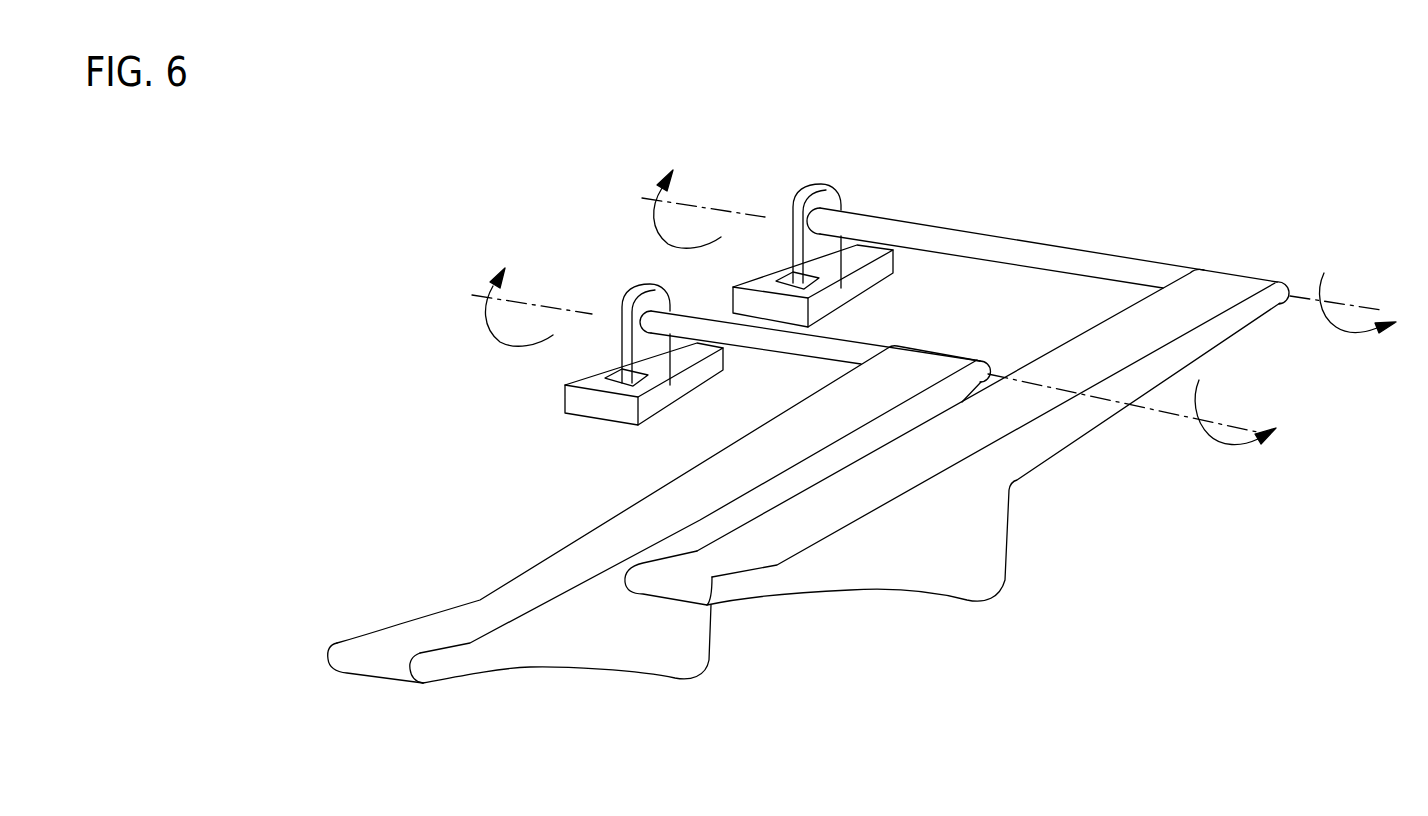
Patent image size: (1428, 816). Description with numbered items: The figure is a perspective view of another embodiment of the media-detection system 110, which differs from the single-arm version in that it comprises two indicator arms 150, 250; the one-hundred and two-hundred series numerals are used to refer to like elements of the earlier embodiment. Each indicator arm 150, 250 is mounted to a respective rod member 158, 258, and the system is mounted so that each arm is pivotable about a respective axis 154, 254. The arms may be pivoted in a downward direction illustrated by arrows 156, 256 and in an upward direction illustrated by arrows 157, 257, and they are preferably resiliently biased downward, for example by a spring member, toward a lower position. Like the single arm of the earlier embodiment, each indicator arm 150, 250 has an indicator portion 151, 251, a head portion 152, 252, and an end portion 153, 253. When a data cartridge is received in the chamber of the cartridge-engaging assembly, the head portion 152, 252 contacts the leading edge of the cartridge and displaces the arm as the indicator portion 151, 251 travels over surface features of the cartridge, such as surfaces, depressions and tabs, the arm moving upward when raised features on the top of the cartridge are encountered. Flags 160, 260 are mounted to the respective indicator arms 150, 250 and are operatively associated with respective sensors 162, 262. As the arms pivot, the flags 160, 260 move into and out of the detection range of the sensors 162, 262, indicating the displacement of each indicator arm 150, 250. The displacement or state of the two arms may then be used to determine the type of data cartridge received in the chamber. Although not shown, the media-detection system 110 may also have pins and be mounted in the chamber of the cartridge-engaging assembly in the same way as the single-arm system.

The media-detection system 110 is at (355, 246).
The indicator arm 150 is at (583, 548).
The indicator portion 151 is at (670, 683).
The head portion 152 is at (368, 677).
The end portion 153 is at (960, 357).
The axis 154 is at (532, 300).
The arrow 156 is at (1218, 447).
The arrow 157 is at (487, 310).
The rod member 158 is at (827, 348).
The flag 160 is at (668, 299).
The sensor 162 is at (565, 400).
The indicator arm 250 is at (1045, 448).
The indicator portion 251 is at (967, 602).
The head portion 252 is at (673, 600).
The end portion 253 is at (1230, 284).
The axis 254 is at (687, 208).
The arrow 256 is at (1334, 330).
The arrow 257 is at (657, 205).
The rod member 258 is at (1075, 258).
The flag 260 is at (828, 191).
The sensor 262 is at (823, 307).